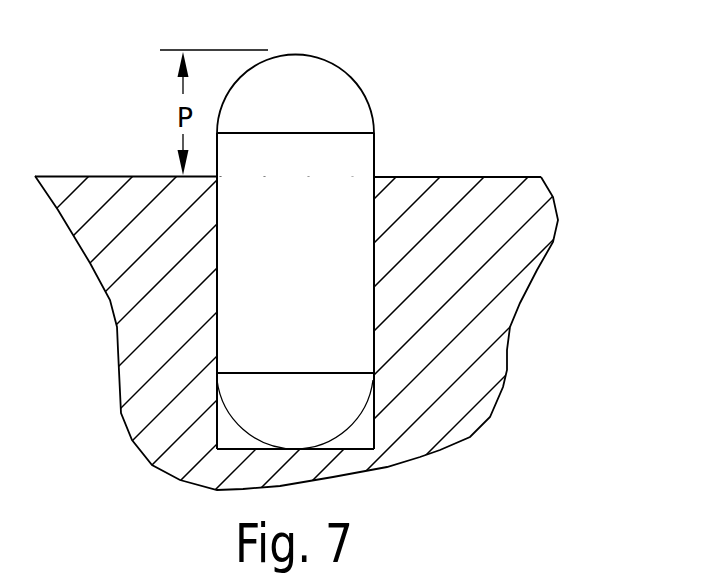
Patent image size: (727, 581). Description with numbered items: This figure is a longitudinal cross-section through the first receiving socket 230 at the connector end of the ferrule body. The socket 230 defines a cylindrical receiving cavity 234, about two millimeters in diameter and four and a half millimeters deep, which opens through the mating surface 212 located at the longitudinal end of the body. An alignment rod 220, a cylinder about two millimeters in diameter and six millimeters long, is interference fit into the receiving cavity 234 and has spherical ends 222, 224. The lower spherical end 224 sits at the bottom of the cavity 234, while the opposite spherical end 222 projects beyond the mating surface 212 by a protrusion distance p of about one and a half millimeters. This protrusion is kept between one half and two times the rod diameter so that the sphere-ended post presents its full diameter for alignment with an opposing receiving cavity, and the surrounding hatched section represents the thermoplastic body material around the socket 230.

The mating surface 212 is at (464, 177).
The alignment rod 220 is at (377, 152).
The spherical end 222 is at (320, 67).
The spherical end 224 is at (245, 373).
The first receiving socket 230 is at (520, 305).
The first receiving cavity 234 is at (372, 440).